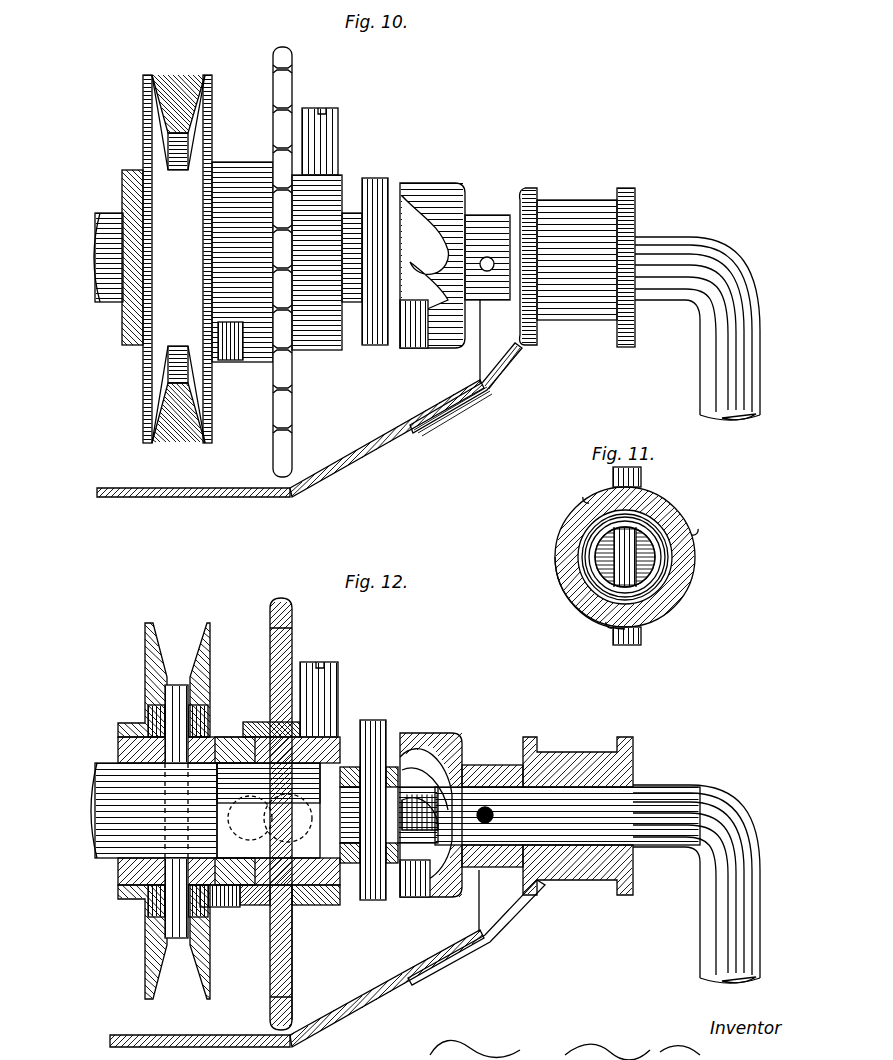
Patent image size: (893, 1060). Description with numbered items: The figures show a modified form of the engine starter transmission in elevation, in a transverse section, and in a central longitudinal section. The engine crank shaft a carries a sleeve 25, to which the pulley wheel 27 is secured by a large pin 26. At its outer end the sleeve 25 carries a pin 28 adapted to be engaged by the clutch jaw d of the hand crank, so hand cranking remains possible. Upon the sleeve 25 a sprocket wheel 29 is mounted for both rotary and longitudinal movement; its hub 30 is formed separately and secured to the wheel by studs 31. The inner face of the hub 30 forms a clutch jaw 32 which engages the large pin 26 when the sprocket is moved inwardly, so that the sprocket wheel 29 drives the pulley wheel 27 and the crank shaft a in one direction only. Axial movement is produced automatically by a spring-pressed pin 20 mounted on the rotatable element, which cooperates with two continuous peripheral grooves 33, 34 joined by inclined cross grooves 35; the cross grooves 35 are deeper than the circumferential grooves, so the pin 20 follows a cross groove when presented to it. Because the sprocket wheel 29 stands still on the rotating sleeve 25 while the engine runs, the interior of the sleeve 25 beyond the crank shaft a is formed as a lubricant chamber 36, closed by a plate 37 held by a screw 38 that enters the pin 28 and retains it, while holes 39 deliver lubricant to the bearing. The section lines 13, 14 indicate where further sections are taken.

In FIG. 10, the crank shaft a is at (94, 262).
In FIG. 12, the crank shaft a is at (88, 822).
In FIG. 10, the section line 13 is at (203, 46).
In FIG. 10, the section line 14 is at (247, 63).
In FIG. 10, the spring-pressed pin 20 is at (320, 141).
In FIG. 12, the spring-pressed pin 20 is at (340, 737).
In FIG. 11, the sleeve 25 is at (680, 520).
In FIG. 12, the sleeve 25 is at (118, 745).
In FIG. 12, the large pin 26 is at (165, 695).
In FIG. 10, the pulley wheel 27 is at (143, 95).
In FIG. 12, the pulley wheel 27 is at (145, 640).
In FIG. 10, the pin 28 is at (372, 178).
In FIG. 11, the pin 28 is at (642, 634).
In FIG. 12, the pin 28 is at (388, 735).
In FIG. 10, the sprocket wheel 29 is at (290, 418).
In FIG. 12, the sprocket wheel 29 is at (293, 645).
In FIG. 10, the hub 30 is at (327, 350).
In FIG. 12, the hub 30 is at (310, 905).
In FIG. 10, the studs 31 is at (262, 362).
In FIG. 12, the studs 31 is at (260, 907).
In FIG. 10, the clutch jaw 32 is at (228, 300).
In FIG. 12, the clutch jaw 32 is at (232, 737).
In FIG. 10, the peripheral groove 33 is at (528, 266).
In FIG. 12, the peripheral groove 33 is at (342, 887).
In FIG. 11, the peripheral groove 34 is at (556, 552).
In FIG. 12, the peripheral groove 34 is at (293, 905).
In FIG. 11, the inclined cross grooves 35 is at (585, 500).
In FIG. 12, the inclined cross grooves 35 is at (288, 818).
In FIG. 12, the chamber 36 is at (268, 810).
In FIG. 11, the plate 37 is at (610, 560).
In FIG. 12, the plate 37 is at (400, 830).
In FIG. 10, the screw 38 is at (425, 240).
In FIG. 11, the screw 38 is at (590, 580).
In FIG. 12, the screw 38 is at (425, 806).
In FIG. 12, the holes 39 is at (262, 722).
In FIG. 10, the clutch jaw d is at (426, 348).
In FIG. 12, the clutch jaw d is at (427, 897).